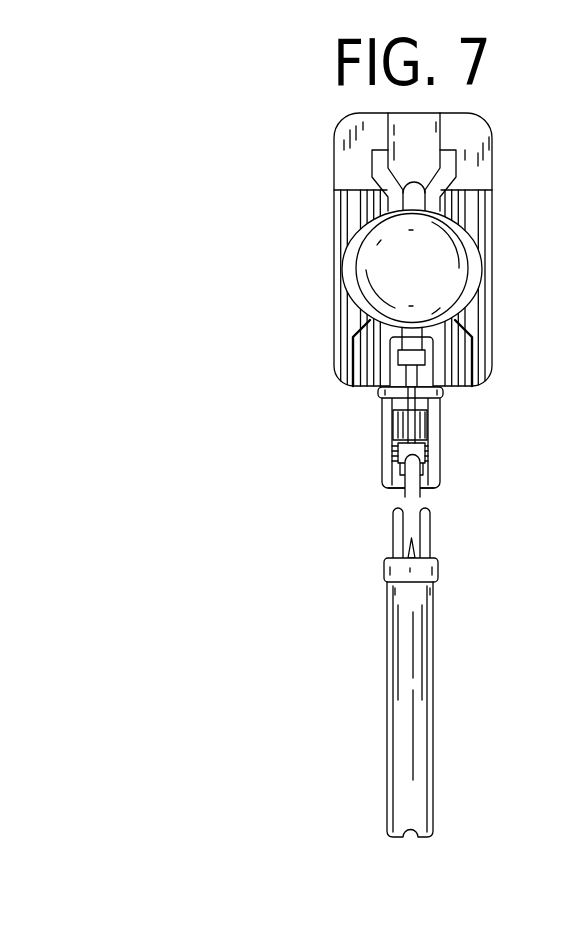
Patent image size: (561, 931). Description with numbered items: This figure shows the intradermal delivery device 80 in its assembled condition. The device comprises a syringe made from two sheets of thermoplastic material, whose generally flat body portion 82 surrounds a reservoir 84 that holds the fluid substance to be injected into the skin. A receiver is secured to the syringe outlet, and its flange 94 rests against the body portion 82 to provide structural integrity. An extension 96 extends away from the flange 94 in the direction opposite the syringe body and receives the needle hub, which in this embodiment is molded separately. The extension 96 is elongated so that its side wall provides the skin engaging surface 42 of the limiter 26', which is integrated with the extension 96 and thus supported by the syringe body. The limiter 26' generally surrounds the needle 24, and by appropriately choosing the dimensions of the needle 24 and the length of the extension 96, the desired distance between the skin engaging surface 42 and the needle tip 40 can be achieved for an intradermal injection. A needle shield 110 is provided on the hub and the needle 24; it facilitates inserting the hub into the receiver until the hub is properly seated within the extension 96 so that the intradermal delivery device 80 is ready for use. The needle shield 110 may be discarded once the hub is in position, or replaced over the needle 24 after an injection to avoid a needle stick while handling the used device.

The intradermal delivery device 80 is at (271, 246).
The body portion 82 is at (477, 170).
The reservoir 84 is at (443, 288).
The flange 94 is at (447, 395).
The extension 96 is at (425, 458).
The needle tip 40 is at (409, 482).
The skin engaging surface 42 is at (412, 492).
The needle 24 is at (405, 495).
The limiter 26' is at (365, 460).
The needle shield 110 is at (445, 686).